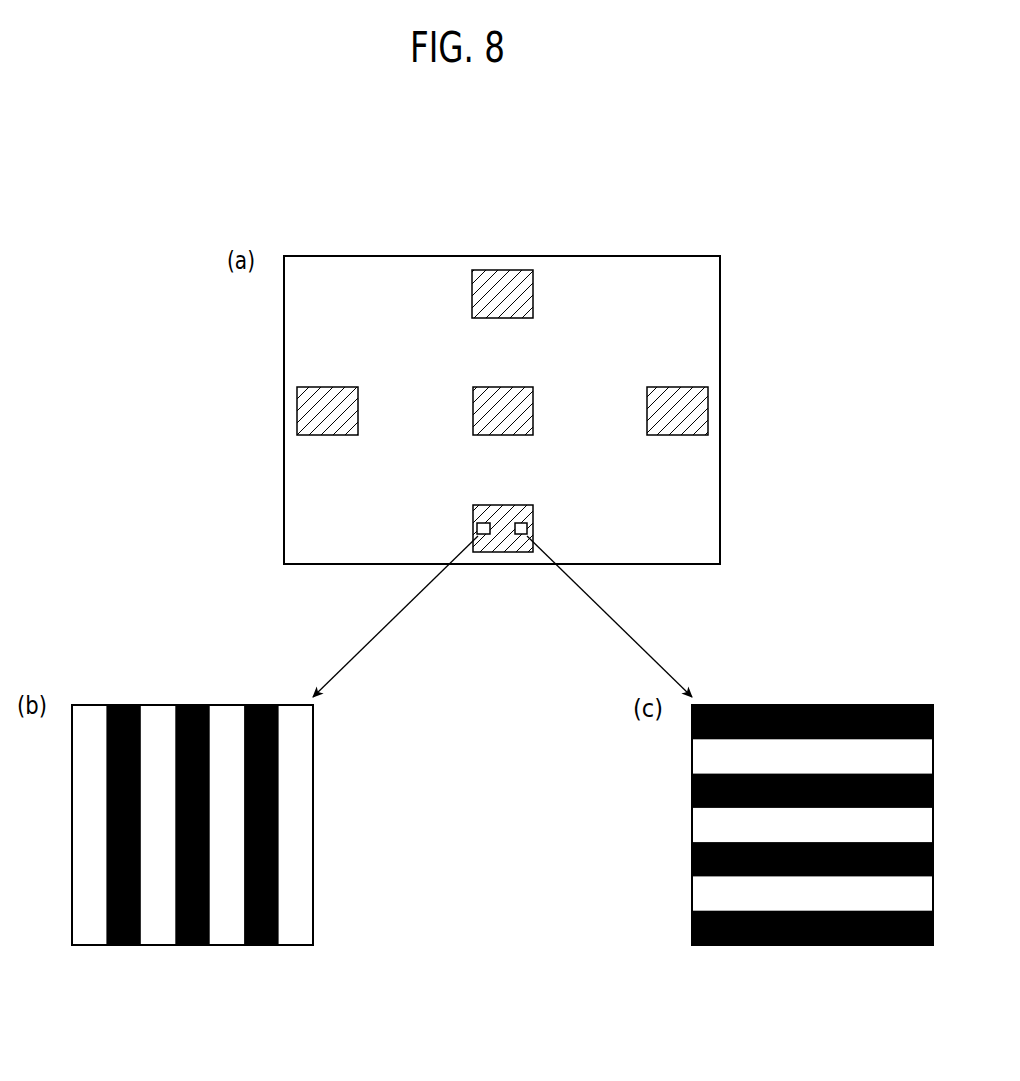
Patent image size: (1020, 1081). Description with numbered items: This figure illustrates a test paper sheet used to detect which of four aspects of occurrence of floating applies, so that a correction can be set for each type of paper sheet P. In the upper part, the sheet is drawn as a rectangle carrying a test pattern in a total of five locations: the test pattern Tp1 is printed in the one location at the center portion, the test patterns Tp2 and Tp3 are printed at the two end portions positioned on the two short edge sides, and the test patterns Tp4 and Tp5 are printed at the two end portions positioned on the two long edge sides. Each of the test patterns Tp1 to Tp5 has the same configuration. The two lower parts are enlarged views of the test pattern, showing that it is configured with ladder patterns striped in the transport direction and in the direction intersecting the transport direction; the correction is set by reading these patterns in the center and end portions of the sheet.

The paper sheet P is at (645, 256).
The test pattern Tp1 is at (500, 387).
The test pattern Tp2 is at (500, 270).
The test pattern Tp3 is at (503, 552).
The test pattern Tp4 is at (297, 410).
The test pattern Tp5 is at (708, 410).